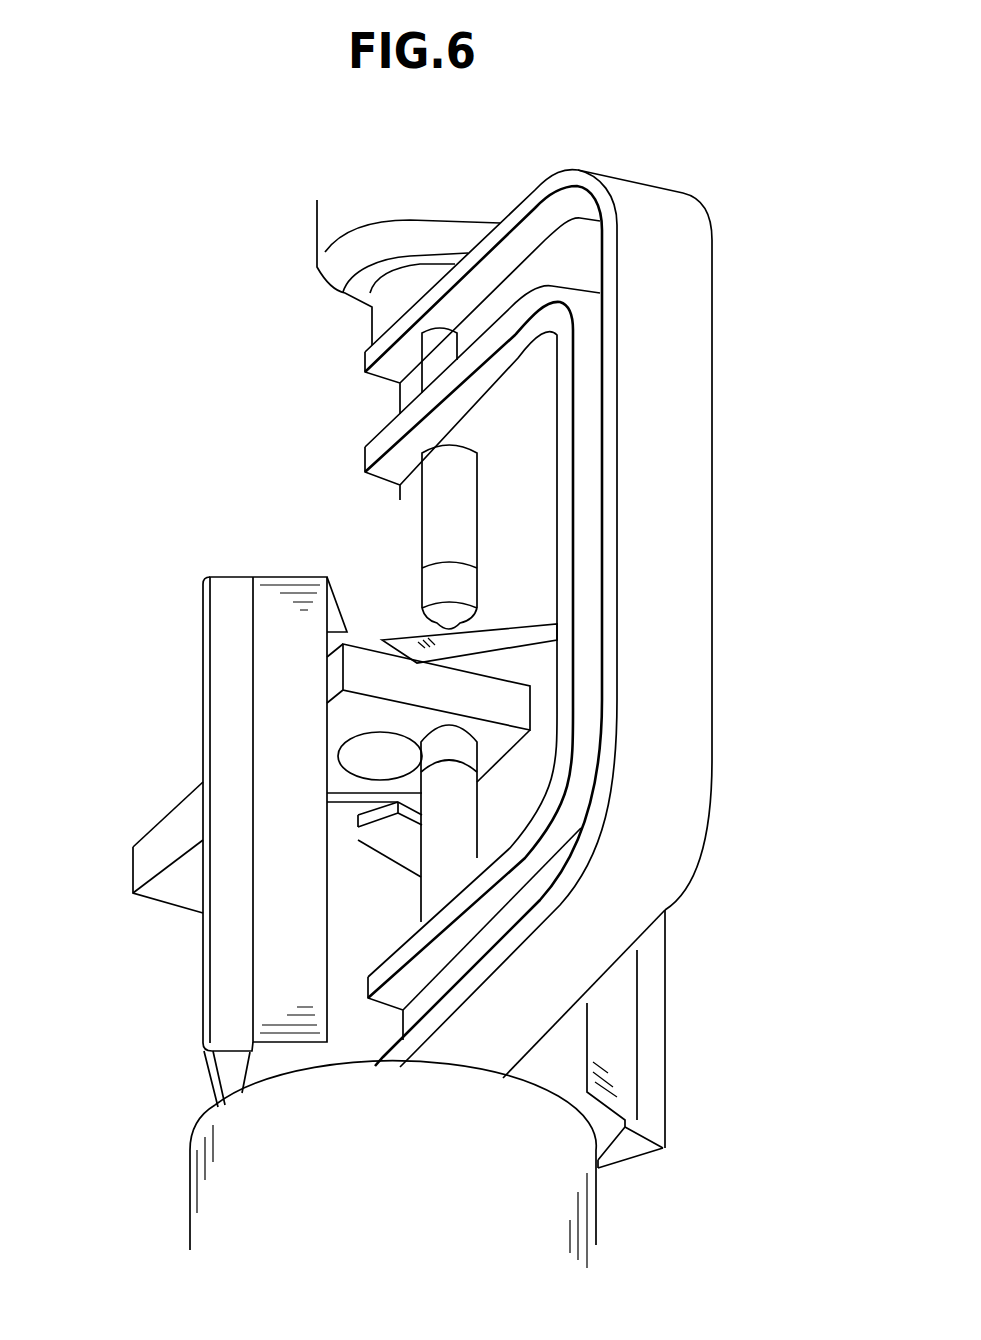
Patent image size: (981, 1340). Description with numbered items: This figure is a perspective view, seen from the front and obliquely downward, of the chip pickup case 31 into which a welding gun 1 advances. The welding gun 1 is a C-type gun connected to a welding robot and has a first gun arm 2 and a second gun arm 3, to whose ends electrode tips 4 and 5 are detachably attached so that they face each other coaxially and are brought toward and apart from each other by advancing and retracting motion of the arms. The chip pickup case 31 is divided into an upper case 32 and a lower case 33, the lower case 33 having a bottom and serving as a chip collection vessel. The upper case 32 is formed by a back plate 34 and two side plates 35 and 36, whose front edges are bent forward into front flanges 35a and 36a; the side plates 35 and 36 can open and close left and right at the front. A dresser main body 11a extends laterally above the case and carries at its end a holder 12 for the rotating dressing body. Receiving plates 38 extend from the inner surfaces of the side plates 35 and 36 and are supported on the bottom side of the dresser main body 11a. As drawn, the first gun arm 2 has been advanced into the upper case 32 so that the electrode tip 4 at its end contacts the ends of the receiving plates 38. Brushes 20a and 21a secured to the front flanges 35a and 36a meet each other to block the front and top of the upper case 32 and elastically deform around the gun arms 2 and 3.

The welding gun 1 is at (733, 470).
The first gun arm 2 is at (453, 808).
The second gun arm 3 is at (460, 527).
The electrode tip 4 is at (460, 753).
The electrode tip 5 is at (460, 600).
The dresser main body 11a is at (176, 890).
The holder 12 is at (376, 733).
The brush 20a is at (275, 722).
The brush 21a is at (620, 993).
The chip pickup case 31 is at (147, 1150).
The upper case 32 is at (206, 1077).
The lower case 33 is at (163, 1177).
The back plate 34 is at (275, 1062).
The side plate 35 is at (202, 1050).
The front flange 35a is at (225, 652).
The side plate 36 is at (632, 1160).
The front flange 36a is at (655, 1055).
The receiving plate 38 is at (340, 820).